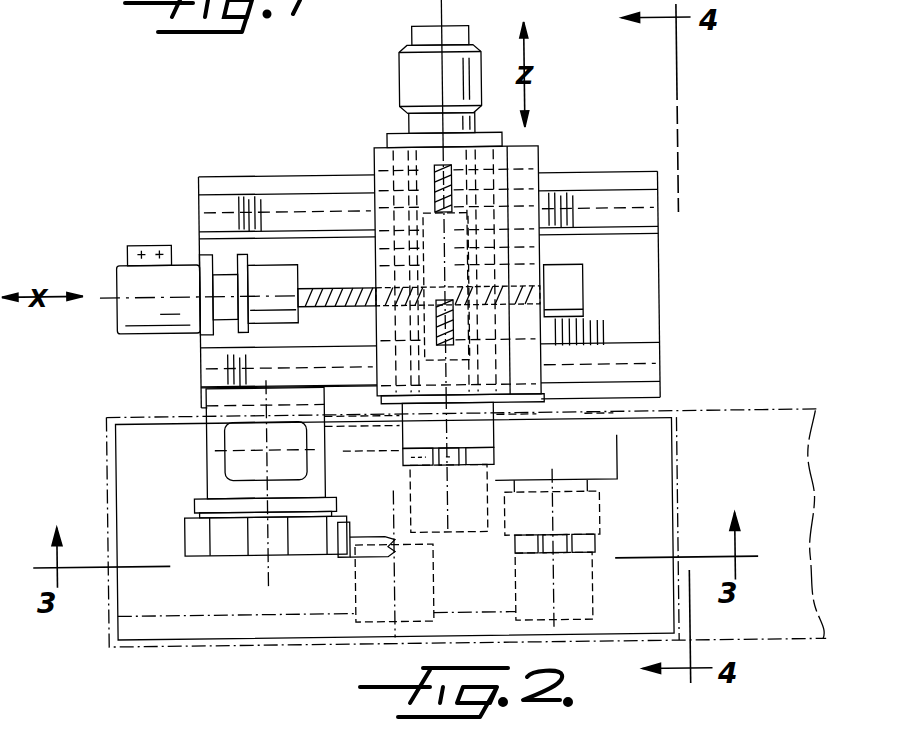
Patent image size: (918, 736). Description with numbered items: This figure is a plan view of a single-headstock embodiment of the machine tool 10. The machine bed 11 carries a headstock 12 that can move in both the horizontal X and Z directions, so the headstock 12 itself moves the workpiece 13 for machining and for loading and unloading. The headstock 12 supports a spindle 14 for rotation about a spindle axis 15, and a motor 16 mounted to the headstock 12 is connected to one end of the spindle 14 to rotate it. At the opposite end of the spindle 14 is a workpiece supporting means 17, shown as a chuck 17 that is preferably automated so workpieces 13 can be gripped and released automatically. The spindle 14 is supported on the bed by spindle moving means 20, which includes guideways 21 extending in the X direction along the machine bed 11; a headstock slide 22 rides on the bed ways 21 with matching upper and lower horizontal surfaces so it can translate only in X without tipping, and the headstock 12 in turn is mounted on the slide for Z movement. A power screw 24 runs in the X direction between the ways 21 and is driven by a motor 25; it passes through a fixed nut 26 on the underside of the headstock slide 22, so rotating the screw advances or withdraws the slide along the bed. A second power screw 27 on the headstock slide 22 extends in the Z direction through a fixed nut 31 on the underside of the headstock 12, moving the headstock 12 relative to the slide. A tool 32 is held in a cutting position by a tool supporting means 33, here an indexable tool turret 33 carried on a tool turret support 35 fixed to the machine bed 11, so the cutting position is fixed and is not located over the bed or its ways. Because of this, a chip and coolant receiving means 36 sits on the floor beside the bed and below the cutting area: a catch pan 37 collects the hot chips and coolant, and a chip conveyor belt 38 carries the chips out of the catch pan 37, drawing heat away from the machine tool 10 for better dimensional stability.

The machine tool 10 is at (190, 134).
The machine bed 11 is at (645, 282).
The headstock 12 is at (383, 182).
The workpiece 13 is at (447, 530).
The spindle 14 is at (477, 403).
The spindle axis 15 is at (441, 18).
The motor 16 is at (406, 72).
The workpiece supporting means 17 is at (488, 438).
The spindle moving means 20 is at (540, 138).
The guideways 21 is at (645, 213).
The headstock slide 22 is at (537, 178).
The power screw 24 is at (339, 289).
The motor 25 is at (122, 273).
The fixed nut 26 is at (425, 300).
The power screw 27 is at (434, 340).
The fixed nut 31 is at (425, 228).
The tool 32 is at (388, 533).
The tool supporting means 33 is at (233, 550).
The tool turret support 35 is at (210, 463).
The chip and coolant receiving means 36 is at (692, 424).
The catch pan 37 is at (675, 476).
The chip conveyor belt 38 is at (789, 637).